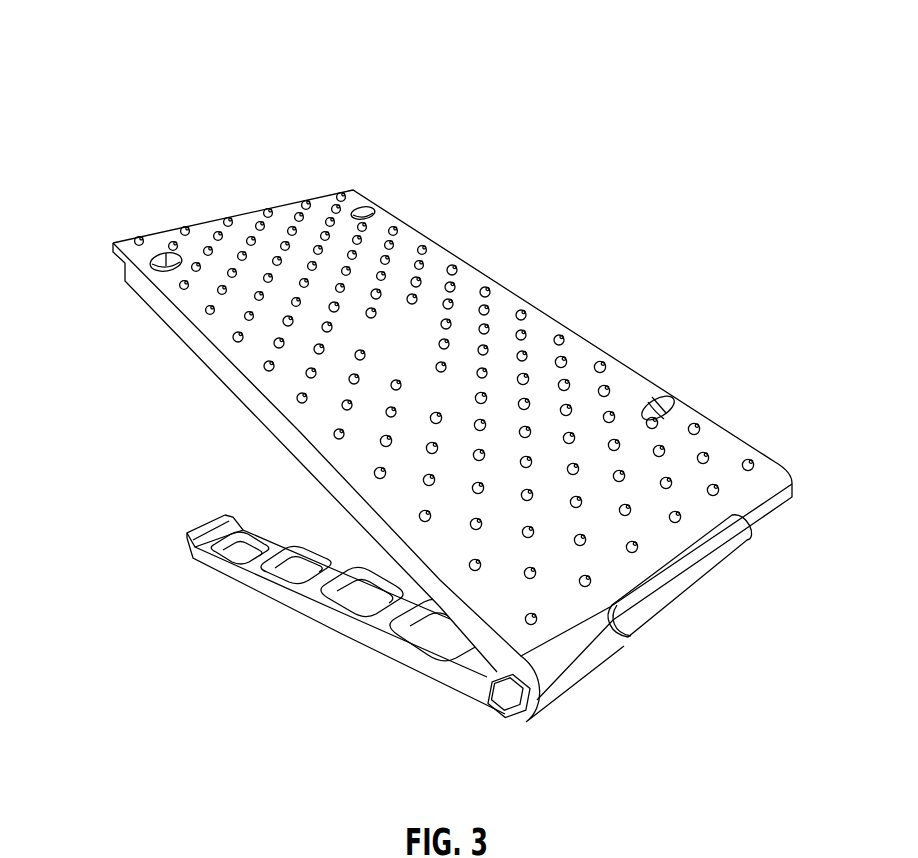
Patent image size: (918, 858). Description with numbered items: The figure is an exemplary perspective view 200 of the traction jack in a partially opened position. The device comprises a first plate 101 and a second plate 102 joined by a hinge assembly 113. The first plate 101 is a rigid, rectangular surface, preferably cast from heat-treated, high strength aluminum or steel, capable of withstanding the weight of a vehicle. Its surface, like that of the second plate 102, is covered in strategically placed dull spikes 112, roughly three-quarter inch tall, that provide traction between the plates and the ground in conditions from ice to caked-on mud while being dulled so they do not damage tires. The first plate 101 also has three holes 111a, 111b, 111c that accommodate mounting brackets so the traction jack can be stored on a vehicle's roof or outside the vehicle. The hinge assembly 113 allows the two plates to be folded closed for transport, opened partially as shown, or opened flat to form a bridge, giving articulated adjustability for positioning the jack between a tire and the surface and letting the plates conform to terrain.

The perspective view 200 is at (122, 47).
The first plate 101 is at (147, 295).
The second plate 102 is at (383, 644).
The hole 111a is at (160, 253).
The hole 111b is at (364, 208).
The hole 111c is at (661, 400).
The spikes 112 is at (523, 312).
The hinge assembly 113 is at (632, 638).